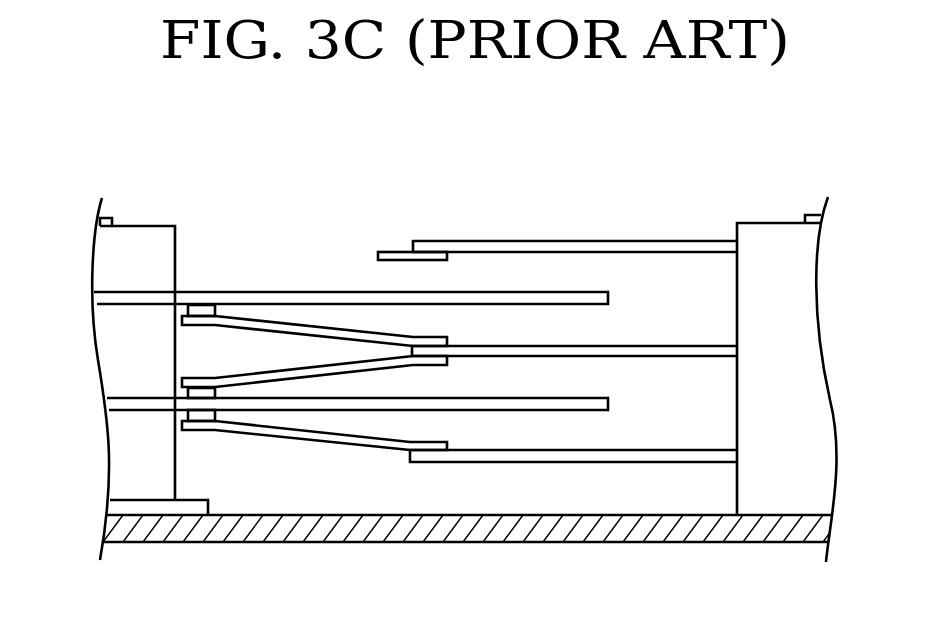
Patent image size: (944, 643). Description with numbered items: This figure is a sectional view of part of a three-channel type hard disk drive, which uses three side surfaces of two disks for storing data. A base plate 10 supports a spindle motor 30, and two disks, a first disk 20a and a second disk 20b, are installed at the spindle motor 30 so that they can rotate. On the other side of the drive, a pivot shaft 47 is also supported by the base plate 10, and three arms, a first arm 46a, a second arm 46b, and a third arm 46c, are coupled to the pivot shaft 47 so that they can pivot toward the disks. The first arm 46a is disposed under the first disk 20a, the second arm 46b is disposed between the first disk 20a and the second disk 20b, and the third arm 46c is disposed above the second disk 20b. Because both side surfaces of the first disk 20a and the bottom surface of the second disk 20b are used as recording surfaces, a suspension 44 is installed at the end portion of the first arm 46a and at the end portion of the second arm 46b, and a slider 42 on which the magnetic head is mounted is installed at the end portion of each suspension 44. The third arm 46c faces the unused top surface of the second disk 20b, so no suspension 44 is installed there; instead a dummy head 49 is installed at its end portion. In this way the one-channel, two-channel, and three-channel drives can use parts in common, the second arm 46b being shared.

The substrate base plate 10 is at (332, 528).
The lower insulating plate 20a is at (390, 405).
The upper insulating plate 20b is at (342, 298).
The left support block 30 is at (150, 237).
The contact terminals 42 is at (187, 308).
The contact spring arms 44 is at (267, 323).
The lower conductive bar 46a is at (538, 468).
The middle conductive bar 46b is at (628, 346).
The upper conductive bar 46c is at (523, 241).
The right support block 47 is at (812, 216).
The spacer 49 is at (397, 252).